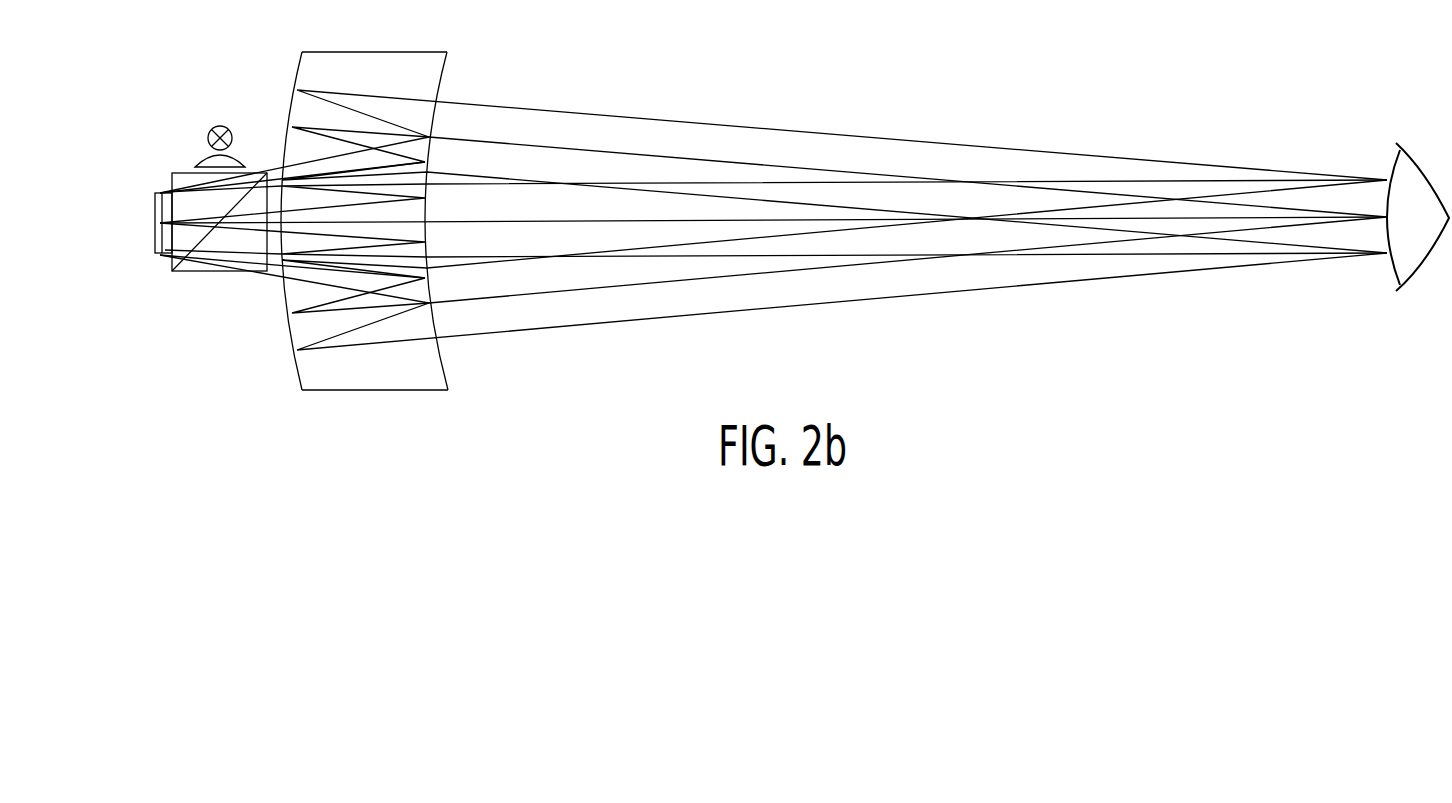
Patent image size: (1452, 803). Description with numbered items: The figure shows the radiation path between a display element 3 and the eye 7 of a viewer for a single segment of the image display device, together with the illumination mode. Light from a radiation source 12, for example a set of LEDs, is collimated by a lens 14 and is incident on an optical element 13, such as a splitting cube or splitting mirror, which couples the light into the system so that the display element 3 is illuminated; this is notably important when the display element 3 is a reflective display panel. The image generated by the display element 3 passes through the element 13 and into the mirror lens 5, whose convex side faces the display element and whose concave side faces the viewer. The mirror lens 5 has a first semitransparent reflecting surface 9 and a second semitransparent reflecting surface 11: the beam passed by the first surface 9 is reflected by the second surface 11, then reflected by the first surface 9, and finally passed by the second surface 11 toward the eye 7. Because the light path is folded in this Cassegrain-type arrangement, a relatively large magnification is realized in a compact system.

The display element 3 is at (153, 242).
The mirror lens 5 is at (381, 254).
The eye 7 is at (1413, 225).
The first semitransparent reflecting surface 9 is at (300, 371).
The second semitransparent reflecting surface 11 is at (448, 370).
The radiation source 12 is at (220, 120).
The optical element 13 is at (208, 273).
The lens 14 is at (195, 164).